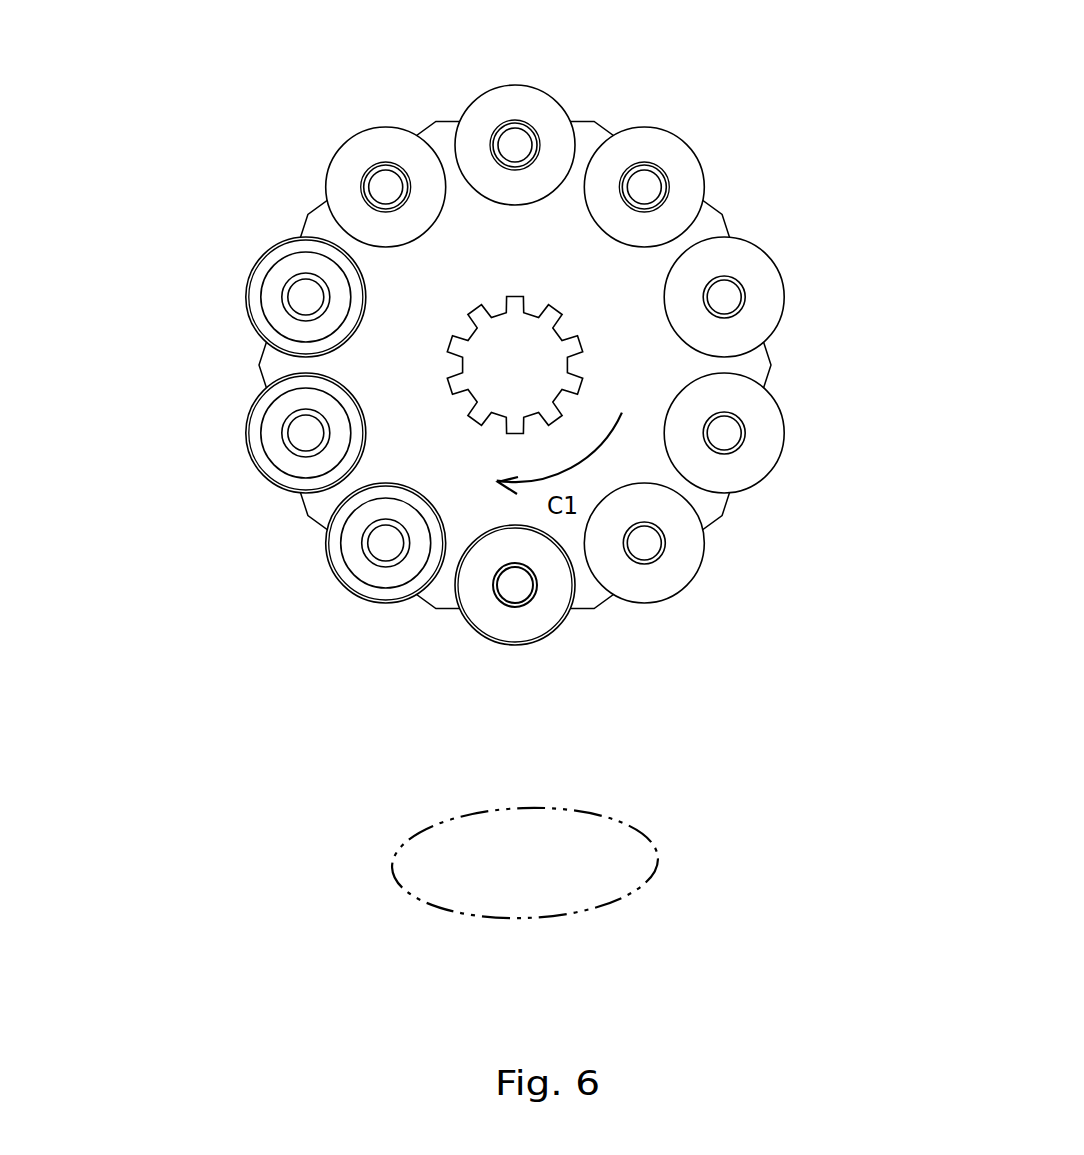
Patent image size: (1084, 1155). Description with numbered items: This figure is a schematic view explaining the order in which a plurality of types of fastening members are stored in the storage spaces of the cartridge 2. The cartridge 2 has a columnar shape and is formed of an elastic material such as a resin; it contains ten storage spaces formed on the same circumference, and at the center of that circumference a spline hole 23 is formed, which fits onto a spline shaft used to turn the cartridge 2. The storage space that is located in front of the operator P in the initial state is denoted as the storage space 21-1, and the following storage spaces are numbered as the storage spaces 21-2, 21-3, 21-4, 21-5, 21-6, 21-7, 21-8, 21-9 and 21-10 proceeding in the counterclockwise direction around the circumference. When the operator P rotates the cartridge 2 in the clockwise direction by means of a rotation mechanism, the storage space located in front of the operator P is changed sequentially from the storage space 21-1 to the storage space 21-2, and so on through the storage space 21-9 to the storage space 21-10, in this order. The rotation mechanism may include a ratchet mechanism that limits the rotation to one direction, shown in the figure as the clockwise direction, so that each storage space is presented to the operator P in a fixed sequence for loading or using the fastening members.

The cartridge 2 is at (875, 645).
The storage space 21-1 is at (462, 590).
The storage space 21-2 is at (600, 582).
The storage space 21-3 is at (708, 490).
The storage space 21-4 is at (752, 348).
The storage space 21-5 is at (694, 222).
The storage space 21-6 is at (572, 162).
The storage space 21-7 is at (434, 157).
The storage space 21-8 is at (327, 250).
The storage space 21-9 is at (285, 385).
The storage space 21-10 is at (335, 512).
The spline hole 23 is at (583, 354).
The operator P is at (405, 842).